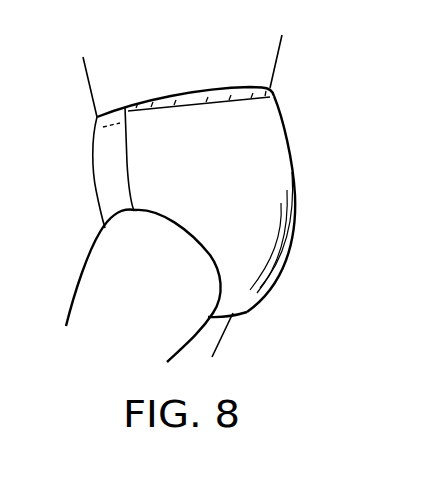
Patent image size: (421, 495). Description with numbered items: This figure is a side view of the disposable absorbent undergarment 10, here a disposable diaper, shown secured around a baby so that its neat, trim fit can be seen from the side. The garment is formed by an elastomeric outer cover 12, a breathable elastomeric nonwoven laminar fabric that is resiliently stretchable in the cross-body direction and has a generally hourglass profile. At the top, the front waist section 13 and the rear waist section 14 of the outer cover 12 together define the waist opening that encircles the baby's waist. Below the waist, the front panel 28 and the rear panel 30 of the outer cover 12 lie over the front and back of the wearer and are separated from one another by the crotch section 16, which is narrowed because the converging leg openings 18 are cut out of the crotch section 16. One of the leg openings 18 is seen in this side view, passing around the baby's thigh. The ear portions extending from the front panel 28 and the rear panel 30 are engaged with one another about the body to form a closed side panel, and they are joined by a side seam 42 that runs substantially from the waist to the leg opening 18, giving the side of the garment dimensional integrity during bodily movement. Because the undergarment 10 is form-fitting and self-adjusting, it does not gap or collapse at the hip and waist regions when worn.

The disposable absorbent undergarment 10 is at (318, 106).
The elastomeric outer cover 12 is at (272, 142).
The front waist section 13 is at (108, 114).
The rear waist section 14 is at (197, 86).
The crotch section 16 is at (256, 317).
The leg openings 18 is at (180, 247).
The front panel 28 is at (82, 189).
The rear panel 30 is at (310, 210).
The side seams 42 is at (128, 162).